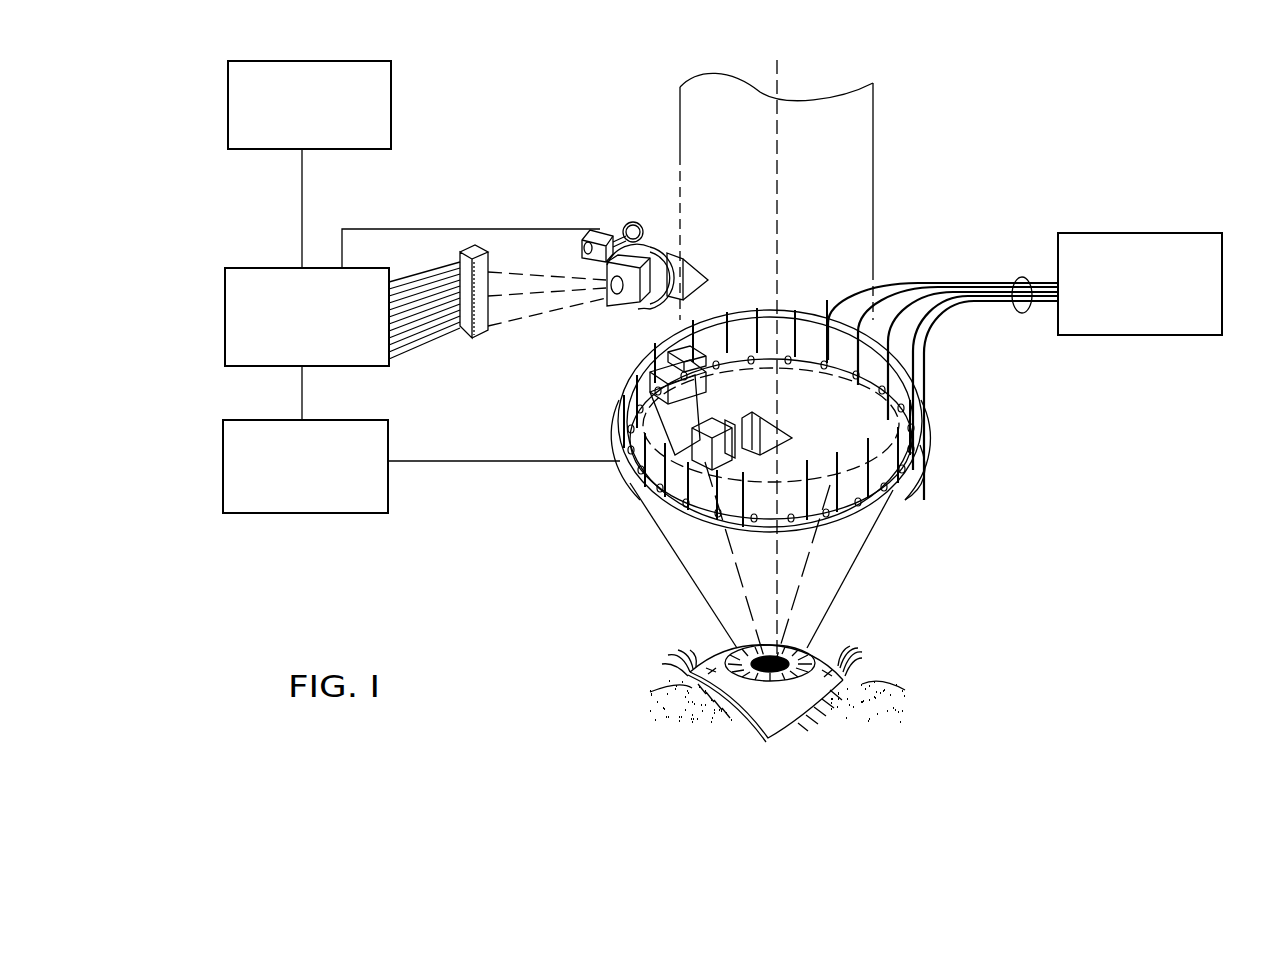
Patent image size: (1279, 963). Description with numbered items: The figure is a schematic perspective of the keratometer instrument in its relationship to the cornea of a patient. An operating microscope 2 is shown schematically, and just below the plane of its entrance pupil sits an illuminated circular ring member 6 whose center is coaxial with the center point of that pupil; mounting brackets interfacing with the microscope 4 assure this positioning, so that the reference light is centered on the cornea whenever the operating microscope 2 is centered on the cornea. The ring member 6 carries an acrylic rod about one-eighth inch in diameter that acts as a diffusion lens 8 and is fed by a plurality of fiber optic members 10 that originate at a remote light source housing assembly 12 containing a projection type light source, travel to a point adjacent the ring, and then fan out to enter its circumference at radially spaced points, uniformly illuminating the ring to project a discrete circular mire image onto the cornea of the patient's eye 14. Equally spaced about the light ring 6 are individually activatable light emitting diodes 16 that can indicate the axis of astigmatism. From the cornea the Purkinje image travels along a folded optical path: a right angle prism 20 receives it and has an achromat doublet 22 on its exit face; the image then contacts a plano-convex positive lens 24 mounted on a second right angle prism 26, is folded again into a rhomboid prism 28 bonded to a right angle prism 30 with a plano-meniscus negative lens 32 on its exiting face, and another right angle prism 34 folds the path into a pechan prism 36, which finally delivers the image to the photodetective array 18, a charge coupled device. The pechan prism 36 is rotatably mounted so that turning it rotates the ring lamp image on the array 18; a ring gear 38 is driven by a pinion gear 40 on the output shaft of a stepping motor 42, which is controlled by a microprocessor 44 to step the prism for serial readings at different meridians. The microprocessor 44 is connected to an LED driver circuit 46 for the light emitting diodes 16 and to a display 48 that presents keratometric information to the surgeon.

The operating microscope 2 is at (875, 158).
The microscope 4 is at (882, 272).
The illuminated circular ring member 6 is at (932, 452).
The diffusion lens 8 is at (633, 491).
The fiber optic members 10 is at (1022, 277).
The light source housing assembly 12 is at (1174, 224).
The patient's eye 14 is at (815, 662).
The light emitting diodes 16 is at (910, 496).
The photodetective array 18 is at (479, 248).
The right angle prism 20 is at (770, 432).
The achromat doublet 22 is at (736, 420).
The plano-convex positive lens 24 is at (720, 430).
The second right angle prism 26 is at (761, 571).
The rhomboid prism 28 is at (660, 385).
The right angle prism 30 is at (660, 372).
The plano-meniscus negative lens 32 is at (674, 351).
The right angle prism 34 is at (686, 270).
The pechan prism 36 is at (640, 296).
The ring gear 38 is at (658, 250).
The pinion gear 40 is at (640, 224).
The stepping motor 42 is at (606, 232).
The microprocessor 44 is at (225, 334).
The LED driver circuit 46 is at (222, 489).
The display 48 is at (228, 110).